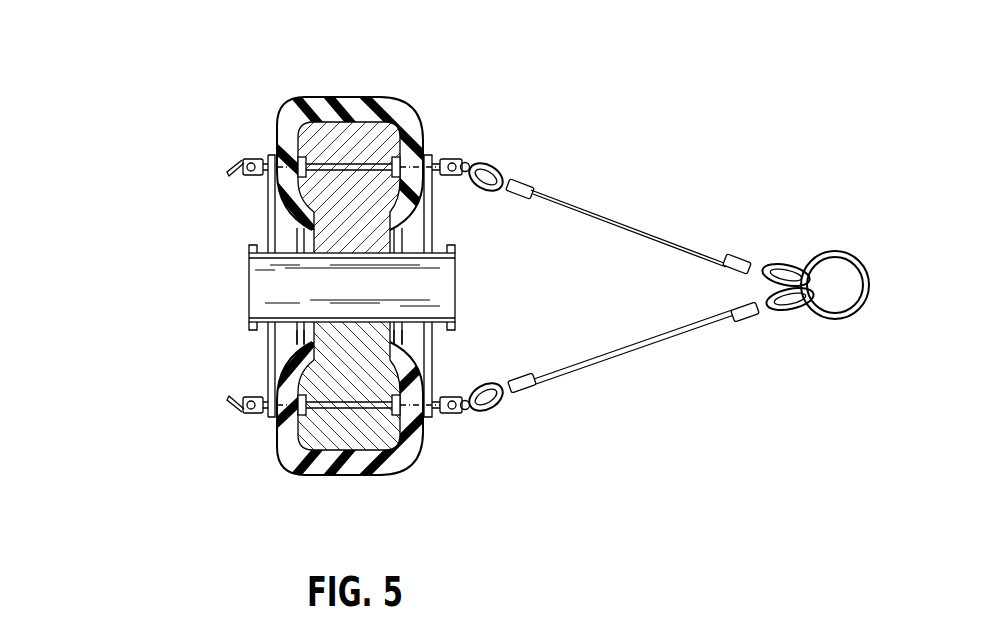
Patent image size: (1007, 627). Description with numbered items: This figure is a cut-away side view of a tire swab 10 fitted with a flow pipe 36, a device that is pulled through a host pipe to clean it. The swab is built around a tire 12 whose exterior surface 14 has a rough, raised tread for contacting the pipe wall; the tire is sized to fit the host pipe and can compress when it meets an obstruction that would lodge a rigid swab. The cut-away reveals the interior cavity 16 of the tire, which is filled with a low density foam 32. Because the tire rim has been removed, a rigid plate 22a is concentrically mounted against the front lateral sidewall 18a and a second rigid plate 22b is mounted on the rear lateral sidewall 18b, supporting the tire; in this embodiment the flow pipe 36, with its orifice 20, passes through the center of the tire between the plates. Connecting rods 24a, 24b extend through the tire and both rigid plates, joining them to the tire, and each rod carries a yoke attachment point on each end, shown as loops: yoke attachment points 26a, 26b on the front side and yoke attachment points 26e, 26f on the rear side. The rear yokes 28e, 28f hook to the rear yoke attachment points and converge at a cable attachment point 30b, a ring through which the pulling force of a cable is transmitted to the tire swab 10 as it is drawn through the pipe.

The tire swab 10 is at (190, 57).
The tire 12 is at (300, 462).
The exterior surface 14 is at (318, 95).
The interior cavity 16 is at (345, 440).
The low density foam 32 is at (366, 136).
The front lateral sidewall 18a is at (278, 428).
The rear lateral sidewall 18b is at (415, 440).
The orifice 20 is at (250, 290).
The rigid plate 22a is at (265, 200).
The second rigid plate 22b is at (433, 360).
The connecting rod 24a is at (372, 413).
The connecting rod 24b is at (335, 163).
The yoke attachment point 26a is at (243, 398).
The yoke attachment point 26b is at (243, 160).
The yoke attachment point 26e is at (452, 412).
The yoke attachment point 26f is at (452, 156).
The yoke 28e is at (610, 362).
The yoke 28f is at (648, 228).
The cable attachment point 30b is at (830, 322).
The flow pipe 36 is at (250, 250).